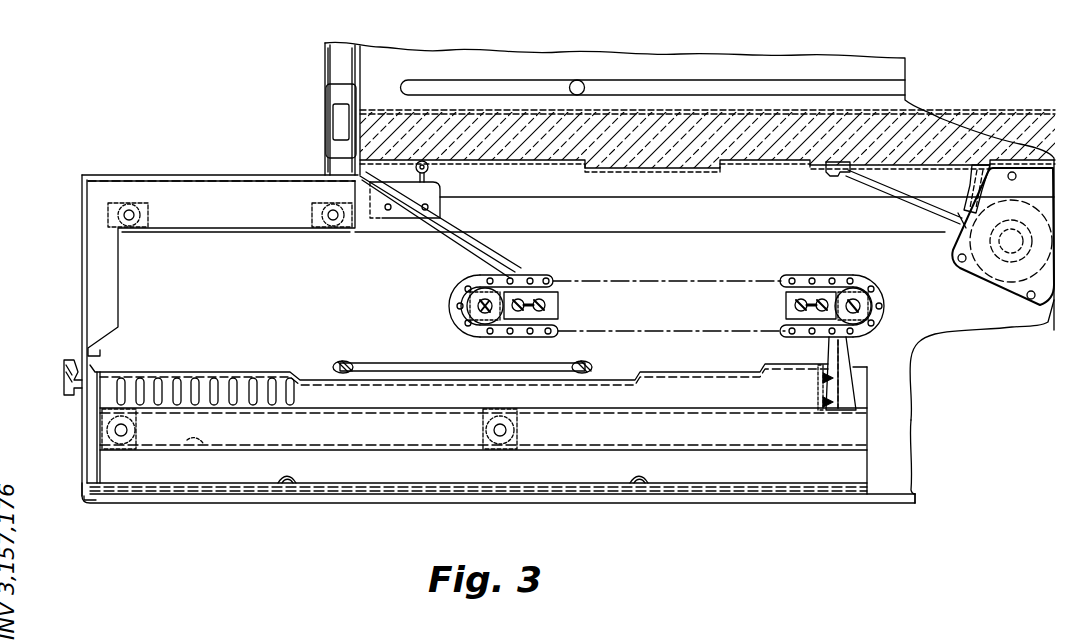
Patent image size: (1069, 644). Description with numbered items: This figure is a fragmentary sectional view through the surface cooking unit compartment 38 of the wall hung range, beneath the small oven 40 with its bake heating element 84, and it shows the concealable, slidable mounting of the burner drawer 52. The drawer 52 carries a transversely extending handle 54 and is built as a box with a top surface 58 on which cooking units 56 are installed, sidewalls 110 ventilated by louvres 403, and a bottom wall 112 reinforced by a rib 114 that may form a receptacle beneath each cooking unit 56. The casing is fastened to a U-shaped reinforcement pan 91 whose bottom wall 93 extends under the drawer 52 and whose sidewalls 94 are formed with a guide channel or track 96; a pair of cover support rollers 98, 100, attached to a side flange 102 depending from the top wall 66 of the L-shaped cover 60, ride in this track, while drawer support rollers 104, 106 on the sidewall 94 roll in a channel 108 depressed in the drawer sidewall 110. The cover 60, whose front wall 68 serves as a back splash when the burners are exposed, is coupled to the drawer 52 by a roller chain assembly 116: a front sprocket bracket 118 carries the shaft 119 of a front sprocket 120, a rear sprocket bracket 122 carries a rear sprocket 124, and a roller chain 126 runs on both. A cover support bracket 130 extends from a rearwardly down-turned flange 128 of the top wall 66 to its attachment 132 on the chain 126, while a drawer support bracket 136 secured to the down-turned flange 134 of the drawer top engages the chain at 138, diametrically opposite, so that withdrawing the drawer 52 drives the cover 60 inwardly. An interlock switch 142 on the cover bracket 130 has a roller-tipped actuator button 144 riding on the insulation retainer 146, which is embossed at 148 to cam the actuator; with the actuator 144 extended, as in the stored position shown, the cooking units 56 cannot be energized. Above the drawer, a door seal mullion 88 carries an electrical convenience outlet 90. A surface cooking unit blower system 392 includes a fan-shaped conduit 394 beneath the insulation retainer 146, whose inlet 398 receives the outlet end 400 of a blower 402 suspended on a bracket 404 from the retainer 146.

The surface cooking unit compartment 38 is at (960, 401).
The small oven 40 is at (425, 75).
The drawer 52 is at (82, 482).
The handle 54 is at (70, 396).
The cooking units 56 is at (346, 364).
The top surface 58 is at (204, 372).
The cover member 60 is at (83, 176).
The top wall 66 is at (196, 175).
The front wall 68 is at (80, 258).
The bake heating element 84 is at (752, 88).
The door seal mullion 88 is at (327, 86).
The electrical convenience outlet 90 is at (322, 124).
The bottom reinforcement pan 91 is at (85, 506).
The bottom wall 93 is at (354, 497).
The sidewall 94 is at (120, 298).
The guide channel 96 is at (280, 230).
The cover support roller 98 is at (128, 230).
The cover support roller 100 is at (335, 230).
The side flange 102 is at (216, 230).
The drawer support roller 104 is at (148, 378).
The drawer support roller 106 is at (526, 428).
The channel 108 is at (188, 444).
The sidewall 110 is at (136, 490).
The bottom wall 112 is at (204, 494).
The ribbing 114 is at (286, 485).
The roller chain assembly 116 is at (798, 280).
The front sprocket bracket 118 is at (548, 306).
The shaft 119 is at (470, 304).
The front sprocket 120 is at (480, 315).
The rear sprocket bracket 122 is at (788, 306).
The rear sprocket 124 is at (838, 313).
The roller chain 126 is at (538, 280).
The down-turned flange 128 is at (358, 190).
The cover support bracket 130 is at (418, 240).
The attachment position 132 is at (510, 272).
The down-turned flange 134 is at (820, 388).
The drawer support bracket 136 is at (846, 364).
The engagement position 138 is at (856, 340).
The interlock switch 142 is at (430, 190).
The actuator button 144 is at (428, 168).
The insulation retainer 146 is at (582, 160).
The recess 148 is at (578, 168).
The surface cooking unit blower system 392 is at (945, 215).
The fan-shaped conduit 394 is at (828, 172).
The inlet 398 is at (945, 208).
The outlet end 400 is at (966, 186).
The blower 402 is at (975, 283).
The louvres 403 is at (276, 378).
The bracket 404 is at (1049, 283).